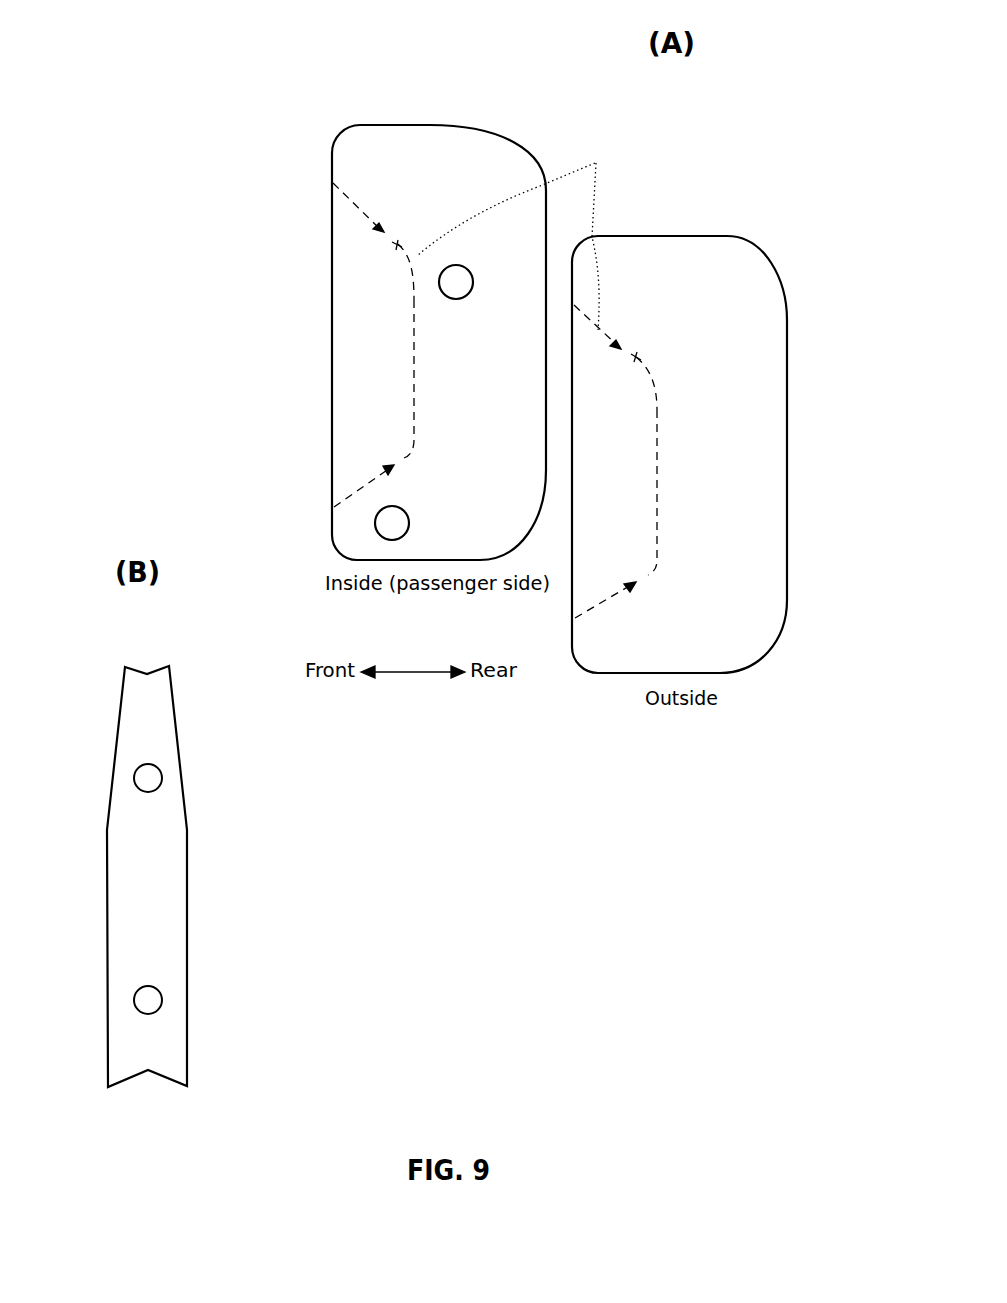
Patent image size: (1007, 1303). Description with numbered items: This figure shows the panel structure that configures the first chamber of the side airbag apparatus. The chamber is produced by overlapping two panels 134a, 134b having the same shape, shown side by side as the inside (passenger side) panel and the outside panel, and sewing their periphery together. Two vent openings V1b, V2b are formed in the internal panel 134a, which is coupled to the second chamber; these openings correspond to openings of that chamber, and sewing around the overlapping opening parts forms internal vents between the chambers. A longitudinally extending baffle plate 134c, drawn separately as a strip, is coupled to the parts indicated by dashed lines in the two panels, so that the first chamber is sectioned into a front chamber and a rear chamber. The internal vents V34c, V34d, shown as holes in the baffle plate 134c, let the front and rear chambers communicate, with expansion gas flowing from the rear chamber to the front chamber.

The internal panel 134a is at (455, 117).
The panel 134b is at (761, 249).
The baffle plate 134c is at (120, 711).
The internal vent V34c is at (385, 240).
The internal vent V34d is at (392, 458).
The vent opening V2b is at (439, 285).
The vent opening V1b is at (375, 525).